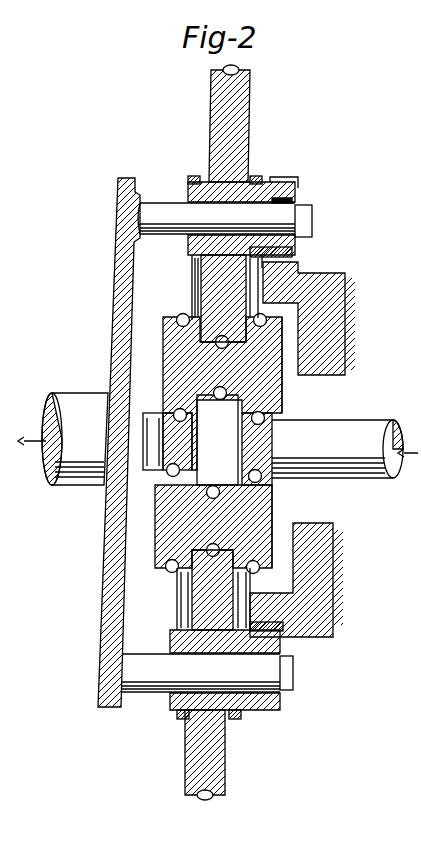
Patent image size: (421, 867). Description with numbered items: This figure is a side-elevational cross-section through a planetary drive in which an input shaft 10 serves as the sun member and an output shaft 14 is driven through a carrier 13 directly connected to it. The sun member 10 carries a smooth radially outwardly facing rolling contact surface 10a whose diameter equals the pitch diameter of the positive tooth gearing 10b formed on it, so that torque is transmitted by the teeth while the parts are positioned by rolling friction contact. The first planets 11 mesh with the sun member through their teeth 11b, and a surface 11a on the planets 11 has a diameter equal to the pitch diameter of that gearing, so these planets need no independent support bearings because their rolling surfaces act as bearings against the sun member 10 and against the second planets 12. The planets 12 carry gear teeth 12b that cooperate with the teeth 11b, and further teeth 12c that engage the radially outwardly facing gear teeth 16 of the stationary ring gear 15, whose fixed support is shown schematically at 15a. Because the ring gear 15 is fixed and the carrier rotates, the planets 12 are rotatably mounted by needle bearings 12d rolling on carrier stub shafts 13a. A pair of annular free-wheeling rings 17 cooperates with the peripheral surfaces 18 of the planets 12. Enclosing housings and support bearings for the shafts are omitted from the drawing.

The input shaft 10 is at (394, 478).
The rolling contact surface 10a is at (130, 425).
The positive tooth gearing 10b is at (178, 398).
The planets 11 is at (170, 393).
The surface 11a is at (190, 400).
The teeth 11b is at (228, 398).
The planet rollers 12 is at (226, 116).
The gear teeth 12b is at (240, 68).
The teeth 12c is at (285, 179).
The needle bearings 12d is at (292, 200).
The carrier 13 is at (125, 268).
The carrier stub shafts 13a is at (315, 222).
The output shaft 14 is at (72, 480).
The ring gear 15 is at (322, 290).
The fixed support 15a is at (348, 330).
The gear teeth 16 is at (296, 257).
The free-wheeling rings 17 is at (192, 175).
The peripheral surfaces 18 is at (188, 192).